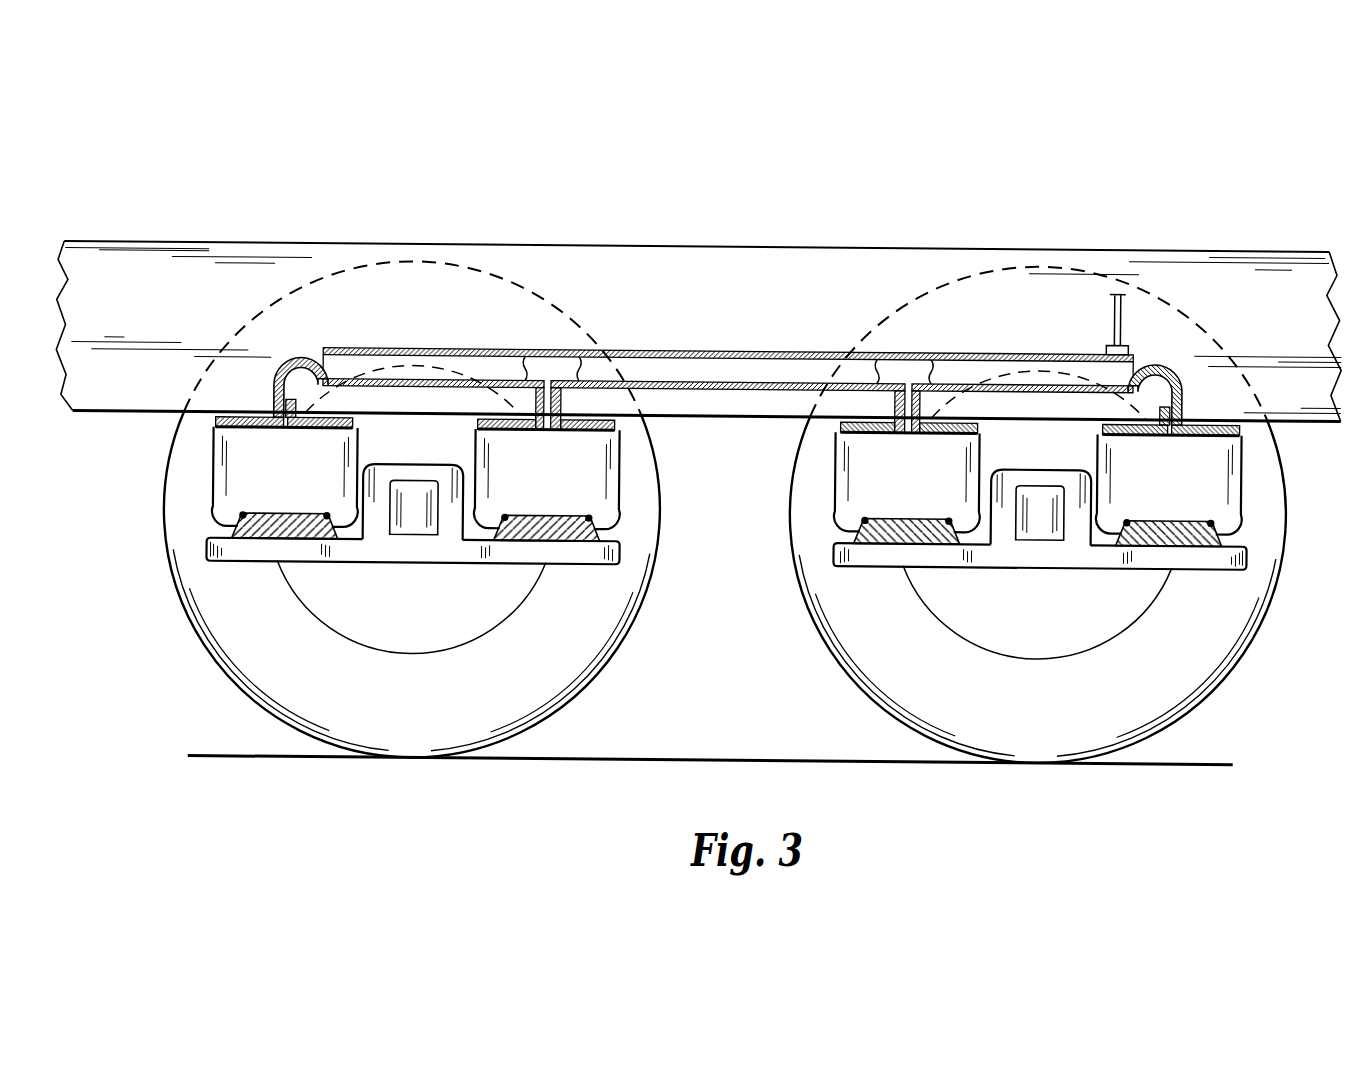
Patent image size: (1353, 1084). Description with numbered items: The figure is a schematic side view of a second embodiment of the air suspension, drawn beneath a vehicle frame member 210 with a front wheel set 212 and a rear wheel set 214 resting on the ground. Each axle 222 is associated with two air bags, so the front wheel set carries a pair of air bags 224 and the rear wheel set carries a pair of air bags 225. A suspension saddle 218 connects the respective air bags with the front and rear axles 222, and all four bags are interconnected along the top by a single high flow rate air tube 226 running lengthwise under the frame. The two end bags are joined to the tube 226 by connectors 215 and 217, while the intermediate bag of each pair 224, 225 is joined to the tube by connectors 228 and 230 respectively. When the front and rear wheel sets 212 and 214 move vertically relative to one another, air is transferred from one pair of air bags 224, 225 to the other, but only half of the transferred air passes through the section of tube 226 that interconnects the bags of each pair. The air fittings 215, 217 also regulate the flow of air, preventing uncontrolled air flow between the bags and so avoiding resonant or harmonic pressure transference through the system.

The vehicle frame beam 210 is at (316, 249).
The front wheel set 212 is at (391, 719).
The rear wheel set 214 is at (1022, 723).
The connector 215 is at (297, 366).
The connector 217 is at (1172, 376).
The suspension saddle 218 is at (872, 567).
The axle 222 is at (418, 527).
The air bag 224 is at (264, 493).
The air bag 225 is at (890, 493).
The high flow rate air tube 226 is at (671, 360).
The connector 228 is at (594, 383).
The connector 230 is at (940, 398).